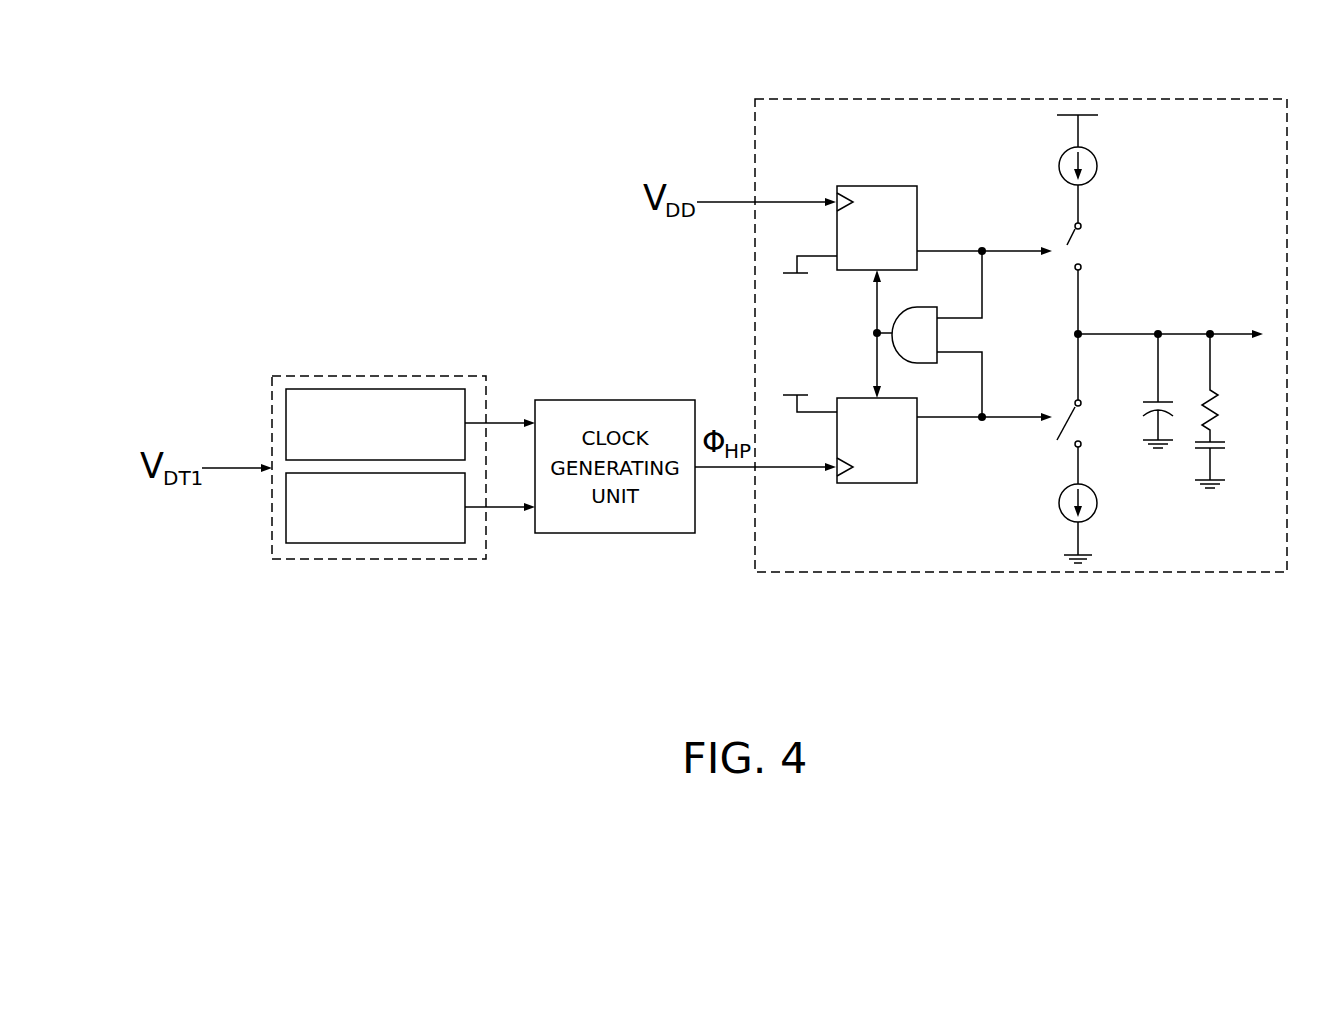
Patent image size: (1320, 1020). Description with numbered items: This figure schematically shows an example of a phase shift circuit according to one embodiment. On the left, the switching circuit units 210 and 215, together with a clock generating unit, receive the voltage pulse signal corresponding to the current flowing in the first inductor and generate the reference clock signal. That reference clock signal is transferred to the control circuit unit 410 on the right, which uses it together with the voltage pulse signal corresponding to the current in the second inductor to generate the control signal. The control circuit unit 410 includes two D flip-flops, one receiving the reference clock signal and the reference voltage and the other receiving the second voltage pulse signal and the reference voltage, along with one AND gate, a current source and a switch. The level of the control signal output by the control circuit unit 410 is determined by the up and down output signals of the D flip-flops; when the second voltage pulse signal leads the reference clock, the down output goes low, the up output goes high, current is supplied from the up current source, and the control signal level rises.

The switching circuit unit 210 is at (324, 508).
The switching circuit unit 215 is at (377, 543).
The control circuit unit 410 is at (872, 572).